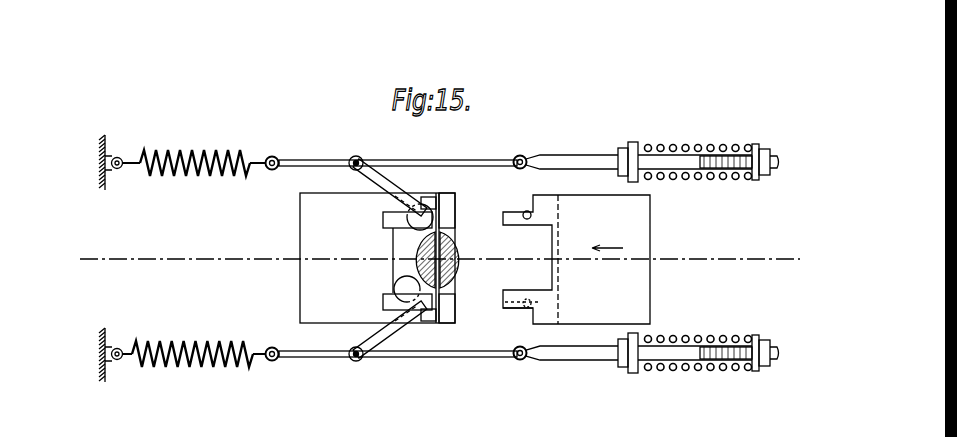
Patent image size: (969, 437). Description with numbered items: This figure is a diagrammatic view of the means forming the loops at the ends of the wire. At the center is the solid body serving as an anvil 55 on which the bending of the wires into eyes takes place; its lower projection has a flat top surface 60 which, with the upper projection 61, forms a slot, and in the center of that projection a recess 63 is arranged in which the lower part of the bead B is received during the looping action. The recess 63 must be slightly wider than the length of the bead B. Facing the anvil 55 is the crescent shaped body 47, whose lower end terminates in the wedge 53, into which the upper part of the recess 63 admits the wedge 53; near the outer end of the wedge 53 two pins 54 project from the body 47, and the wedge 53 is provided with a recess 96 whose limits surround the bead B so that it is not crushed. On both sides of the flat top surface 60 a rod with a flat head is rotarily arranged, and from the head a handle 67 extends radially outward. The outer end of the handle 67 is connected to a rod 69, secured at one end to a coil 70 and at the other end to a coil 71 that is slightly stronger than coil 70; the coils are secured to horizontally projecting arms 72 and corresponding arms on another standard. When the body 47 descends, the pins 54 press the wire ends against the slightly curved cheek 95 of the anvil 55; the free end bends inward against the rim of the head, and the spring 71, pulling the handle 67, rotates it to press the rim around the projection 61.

The crescent shaped body 47 is at (576, 259).
The wedge 53 is at (548, 318).
The pins 54 is at (495, 310).
The anvil 55 is at (300, 281).
The flat top surface 60 is at (448, 210).
The upper projection 61 is at (425, 196).
The recess 63 is at (400, 268).
The handle 67 is at (390, 174).
The rod 69 is at (304, 360).
The coil 70 is at (176, 367).
The coil 71 is at (679, 372).
The arms 72 is at (110, 371).
The cheek 95 is at (398, 220).
The recess 96 is at (516, 226).
The bead B is at (460, 250).